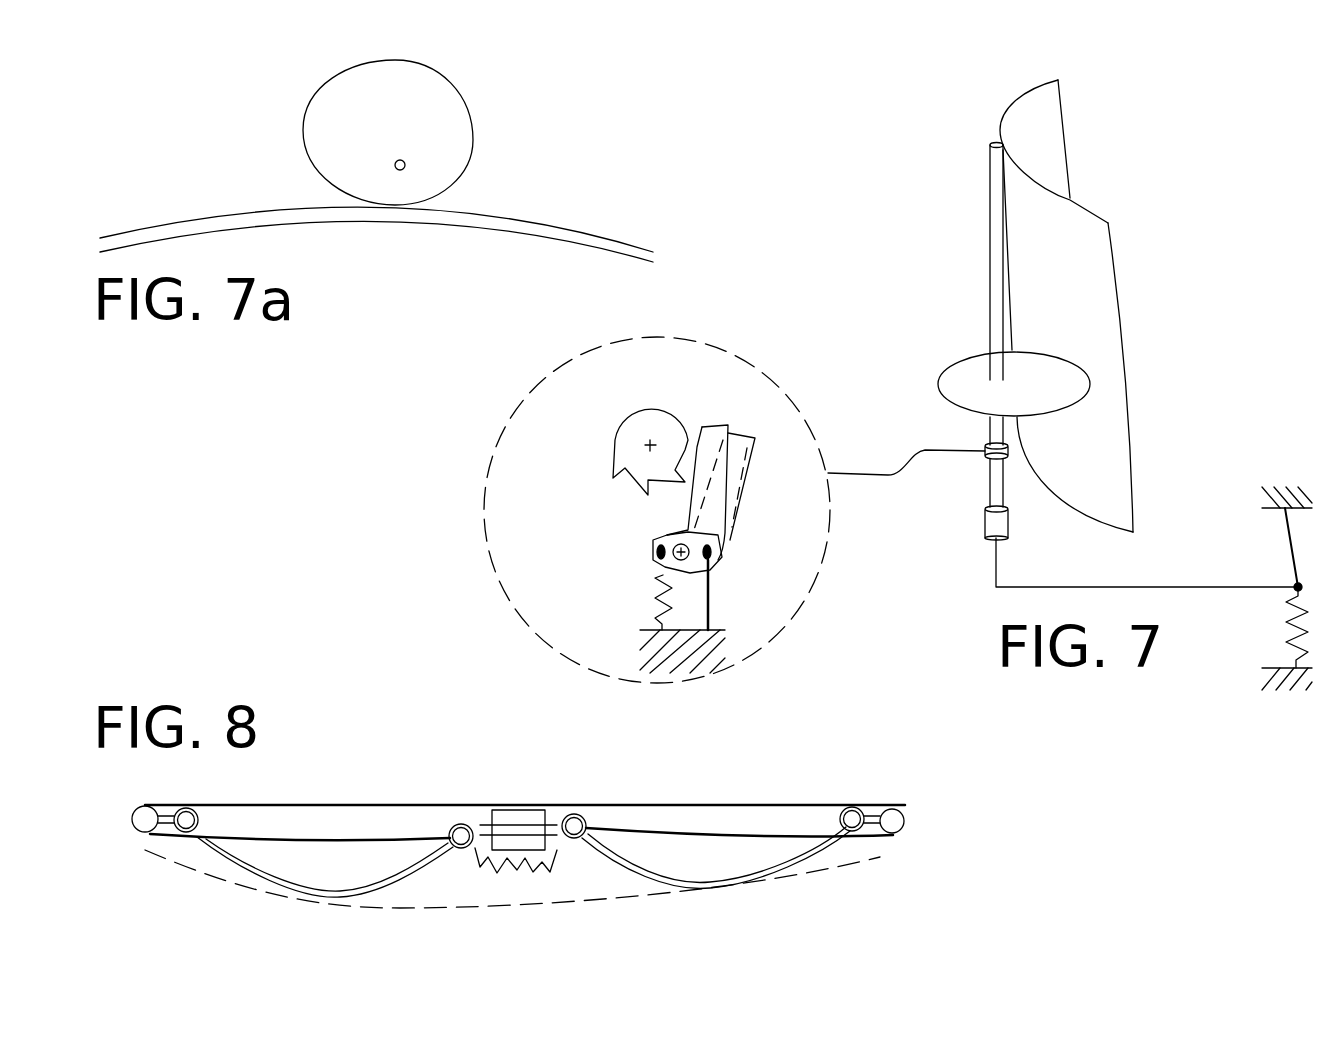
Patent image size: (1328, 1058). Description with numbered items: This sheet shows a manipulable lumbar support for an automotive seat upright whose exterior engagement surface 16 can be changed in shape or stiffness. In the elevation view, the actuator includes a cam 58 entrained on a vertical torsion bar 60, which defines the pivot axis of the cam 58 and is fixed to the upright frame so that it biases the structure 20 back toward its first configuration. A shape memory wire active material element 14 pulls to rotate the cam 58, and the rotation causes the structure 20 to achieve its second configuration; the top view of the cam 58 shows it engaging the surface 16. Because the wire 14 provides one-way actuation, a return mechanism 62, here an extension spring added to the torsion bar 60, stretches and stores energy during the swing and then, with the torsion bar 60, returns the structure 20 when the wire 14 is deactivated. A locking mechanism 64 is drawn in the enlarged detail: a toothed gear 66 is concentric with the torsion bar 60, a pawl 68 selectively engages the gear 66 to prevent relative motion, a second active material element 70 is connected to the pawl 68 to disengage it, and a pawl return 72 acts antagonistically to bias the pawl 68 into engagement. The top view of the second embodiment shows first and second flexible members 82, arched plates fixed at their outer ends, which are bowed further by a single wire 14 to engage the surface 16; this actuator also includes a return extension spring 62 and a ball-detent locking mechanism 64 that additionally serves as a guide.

In FIG. 7, the active material element 14 is at (1288, 542).
In FIG. 8, the active material element 14 is at (460, 803).
In FIG. 7a, the exterior engagement surface 16 is at (367, 223).
In FIG. 8, the exterior engagement surface 16 is at (770, 893).
In FIG. 7a, the structure 20 is at (407, 128).
In FIG. 7, the structure 20 is at (1115, 287).
In FIG. 8, the structure 20 is at (900, 807).
In FIG. 7, the cam 58 is at (963, 355).
In FIG. 7, the torsion bar 60 is at (990, 270).
In FIG. 7, the return mechanism 62 is at (1284, 620).
In FIG. 8, the return mechanism 62 is at (530, 868).
In FIG. 8, the locking mechanism 64 is at (535, 810).
In FIG. 7, the toothed gear 66 is at (652, 408).
In FIG. 7, the pawl 68 is at (728, 520).
In FIG. 7, the active material element 70 is at (704, 578).
In FIG. 7, the pawl return 72 is at (655, 576).
In FIG. 8, the flexible members 82 is at (817, 852).